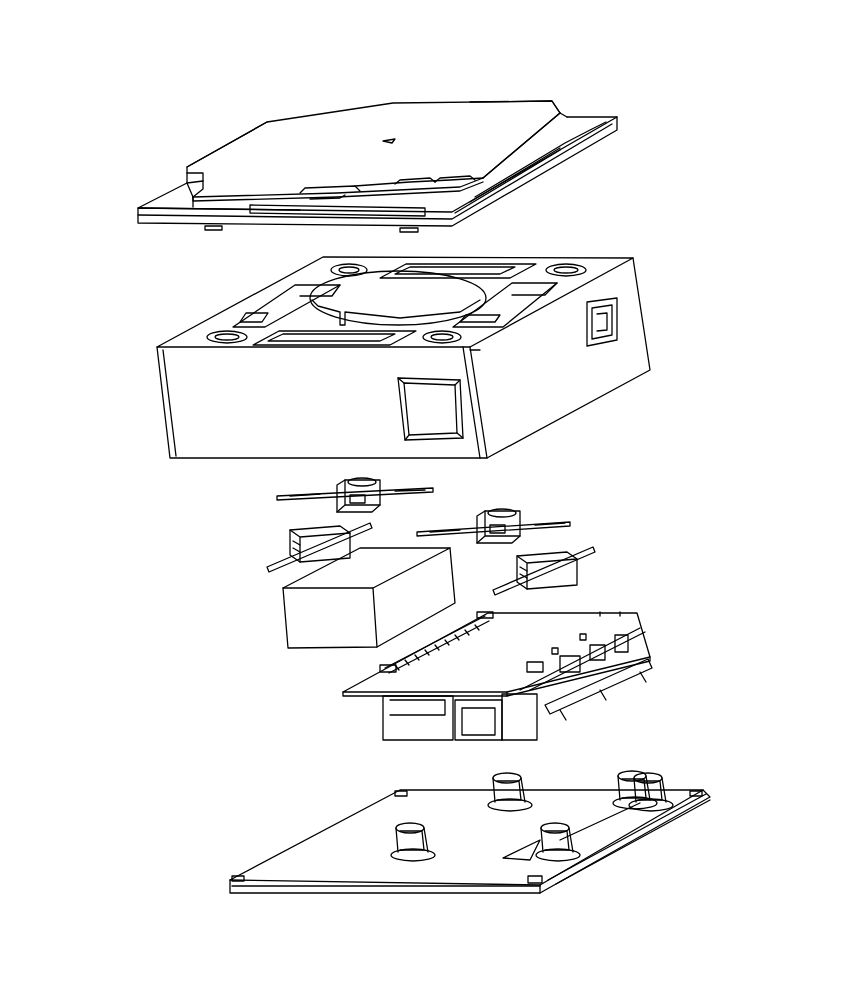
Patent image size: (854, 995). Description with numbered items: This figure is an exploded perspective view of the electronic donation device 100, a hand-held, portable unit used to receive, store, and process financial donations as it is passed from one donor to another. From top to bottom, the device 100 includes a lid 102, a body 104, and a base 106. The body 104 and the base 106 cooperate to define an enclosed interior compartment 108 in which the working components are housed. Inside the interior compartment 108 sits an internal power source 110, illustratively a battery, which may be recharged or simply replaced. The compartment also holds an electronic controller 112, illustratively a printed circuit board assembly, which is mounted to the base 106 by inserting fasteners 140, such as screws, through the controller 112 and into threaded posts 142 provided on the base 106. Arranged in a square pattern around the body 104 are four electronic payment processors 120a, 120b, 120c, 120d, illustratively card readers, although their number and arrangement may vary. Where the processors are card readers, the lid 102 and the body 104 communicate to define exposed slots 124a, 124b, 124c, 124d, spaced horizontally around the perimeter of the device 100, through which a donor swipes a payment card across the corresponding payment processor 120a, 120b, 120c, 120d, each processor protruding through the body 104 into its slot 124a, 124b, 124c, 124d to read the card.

The electronic device 100 is at (627, 82).
The lid 102 is at (175, 197).
The body 104 is at (182, 340).
The base 106 is at (270, 872).
The interior compartment 108 is at (632, 723).
The internal power source 110 is at (291, 622).
The electronic controller 112 is at (573, 623).
The payment processor 120a is at (290, 548).
The payment processor 120b is at (505, 512).
The payment processor 120c is at (577, 572).
The payment processor 120d is at (337, 486).
The exposed slot 124a is at (204, 137).
The exposed slot 124b is at (512, 91).
The exposed slot 124c is at (526, 158).
The exposed slot 124d is at (235, 208).
The fasteners 140 is at (380, 668).
The threaded posts 142 is at (403, 823).